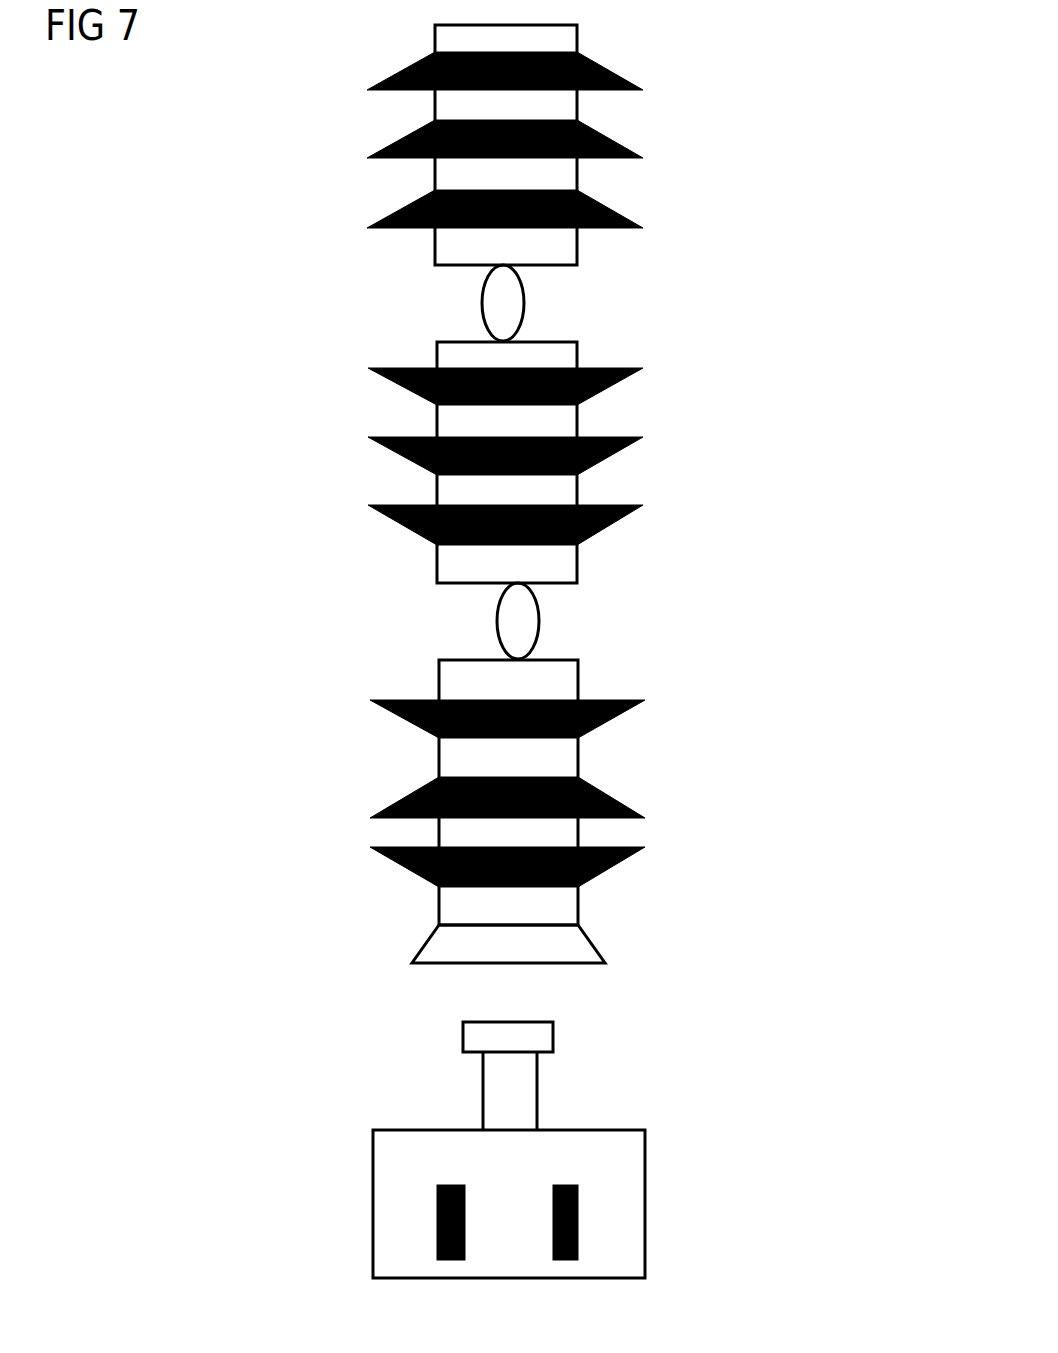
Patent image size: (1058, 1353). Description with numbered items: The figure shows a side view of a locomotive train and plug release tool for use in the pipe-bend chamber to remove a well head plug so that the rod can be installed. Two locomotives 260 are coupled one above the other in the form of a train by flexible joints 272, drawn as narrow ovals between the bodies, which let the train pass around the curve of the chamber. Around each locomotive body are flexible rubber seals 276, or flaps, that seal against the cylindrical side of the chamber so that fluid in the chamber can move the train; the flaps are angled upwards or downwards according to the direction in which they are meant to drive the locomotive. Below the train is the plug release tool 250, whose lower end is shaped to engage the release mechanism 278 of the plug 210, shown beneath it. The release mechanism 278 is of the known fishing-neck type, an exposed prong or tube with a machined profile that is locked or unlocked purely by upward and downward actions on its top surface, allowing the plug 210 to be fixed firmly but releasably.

The rubber seals 276 is at (367, 75).
The locomotives 260 is at (353, 304).
The flexible joints 272 is at (515, 623).
The plug release tool 250 is at (487, 905).
The release mechanism 278 is at (483, 1037).
The plug 210 is at (504, 1126).